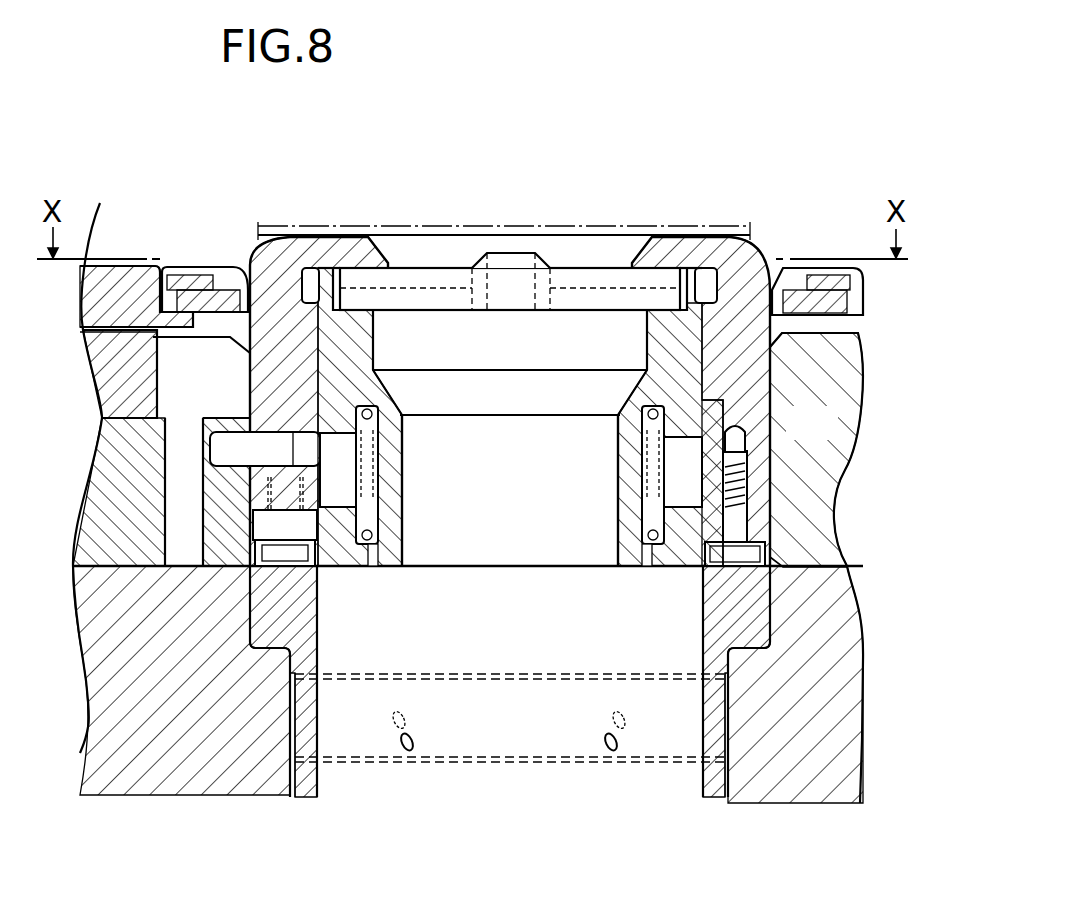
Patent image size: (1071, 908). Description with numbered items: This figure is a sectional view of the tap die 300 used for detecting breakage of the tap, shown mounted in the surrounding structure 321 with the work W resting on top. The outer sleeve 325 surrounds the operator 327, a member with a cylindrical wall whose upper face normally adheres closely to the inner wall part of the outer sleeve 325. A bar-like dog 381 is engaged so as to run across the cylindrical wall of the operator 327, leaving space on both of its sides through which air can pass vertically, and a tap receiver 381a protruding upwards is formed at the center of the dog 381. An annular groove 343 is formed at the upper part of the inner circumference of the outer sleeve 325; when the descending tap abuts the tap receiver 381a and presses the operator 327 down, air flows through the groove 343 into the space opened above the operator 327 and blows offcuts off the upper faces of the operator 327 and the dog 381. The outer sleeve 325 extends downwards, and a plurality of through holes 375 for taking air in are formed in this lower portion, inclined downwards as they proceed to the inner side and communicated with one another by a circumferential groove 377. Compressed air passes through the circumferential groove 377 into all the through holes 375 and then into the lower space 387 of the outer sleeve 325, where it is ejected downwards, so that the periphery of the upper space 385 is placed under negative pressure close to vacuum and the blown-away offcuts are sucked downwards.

The tap die 300 is at (722, 121).
The base member 321 is at (835, 437).
The outer sleeve 325 is at (713, 243).
The operator 327 is at (680, 373).
The annular groove 343 is at (710, 277).
The through holes 375 is at (407, 752).
The circumferential groove 377 is at (513, 738).
The dog 381 is at (362, 280).
The tap receiver 381a is at (510, 258).
The upper space 385 is at (470, 538).
The lower space 387 is at (382, 663).
The workpiece W is at (758, 227).